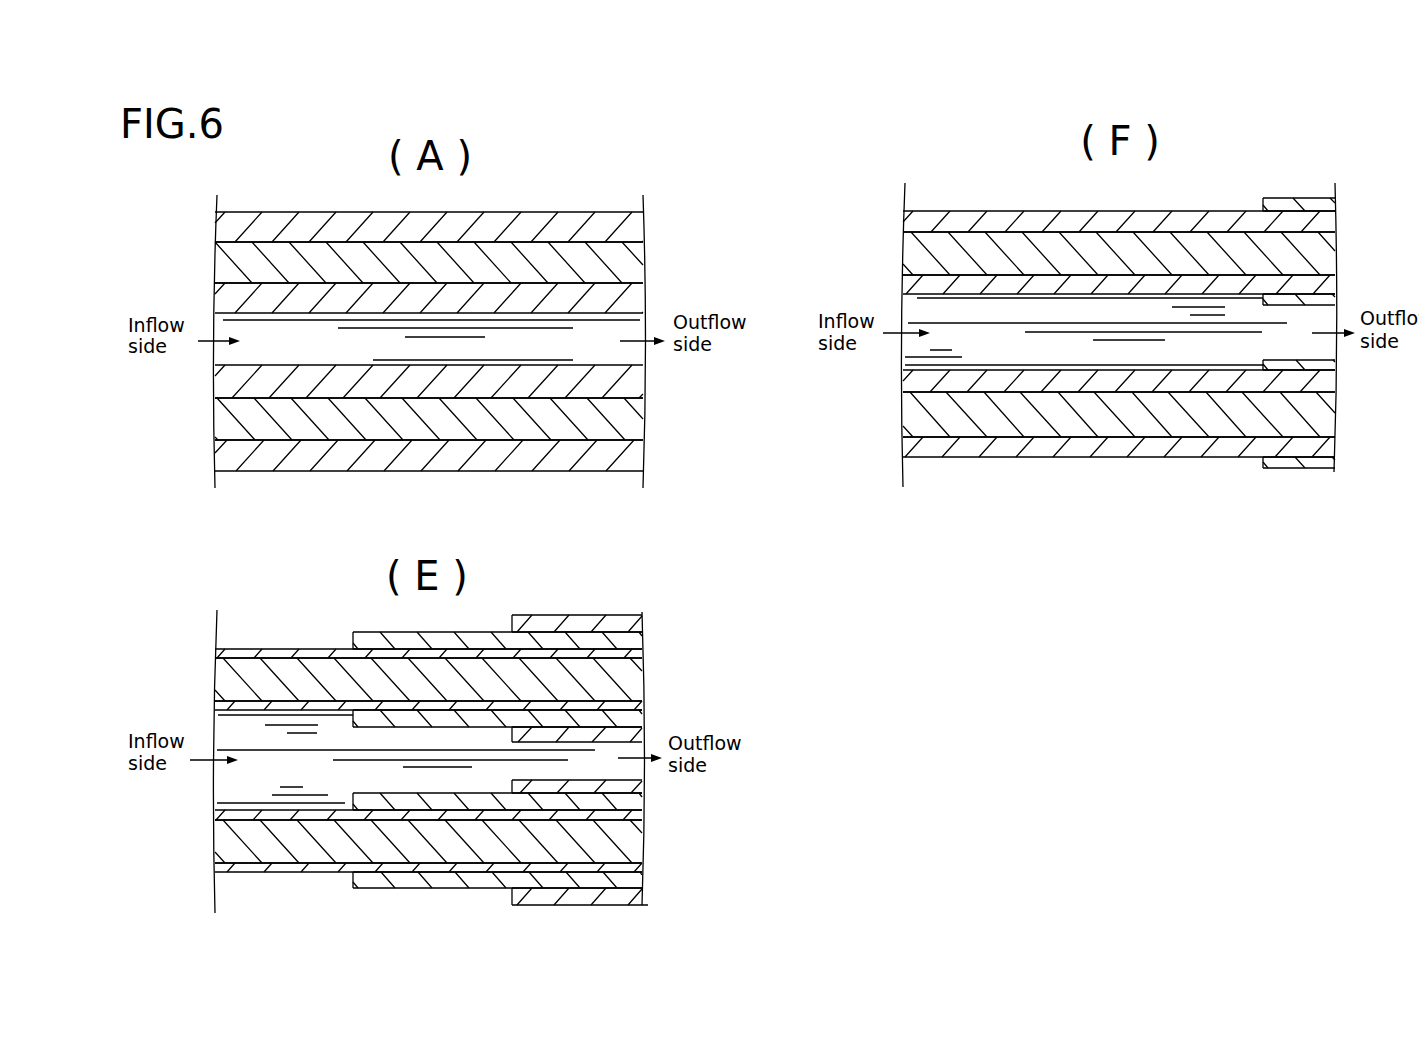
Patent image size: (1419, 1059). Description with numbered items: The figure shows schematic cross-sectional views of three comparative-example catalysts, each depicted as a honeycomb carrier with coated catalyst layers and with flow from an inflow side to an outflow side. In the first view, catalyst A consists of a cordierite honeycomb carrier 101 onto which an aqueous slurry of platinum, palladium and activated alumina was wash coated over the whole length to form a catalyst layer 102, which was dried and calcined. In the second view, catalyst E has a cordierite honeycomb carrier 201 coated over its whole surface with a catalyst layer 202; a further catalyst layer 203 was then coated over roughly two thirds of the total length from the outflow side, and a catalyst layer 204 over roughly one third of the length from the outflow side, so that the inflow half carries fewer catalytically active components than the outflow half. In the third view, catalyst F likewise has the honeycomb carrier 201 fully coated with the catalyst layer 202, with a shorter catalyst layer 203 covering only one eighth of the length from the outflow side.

The honeycomb carrier 101 is at (668, 414).
The catalyst layer 102 is at (668, 450).
The honeycomb carrier 201 is at (1358, 413).
The catalyst layer 202 is at (1336, 222).
The catalyst layer 203 is at (1262, 463).
The catalyst layer 204 is at (514, 898).